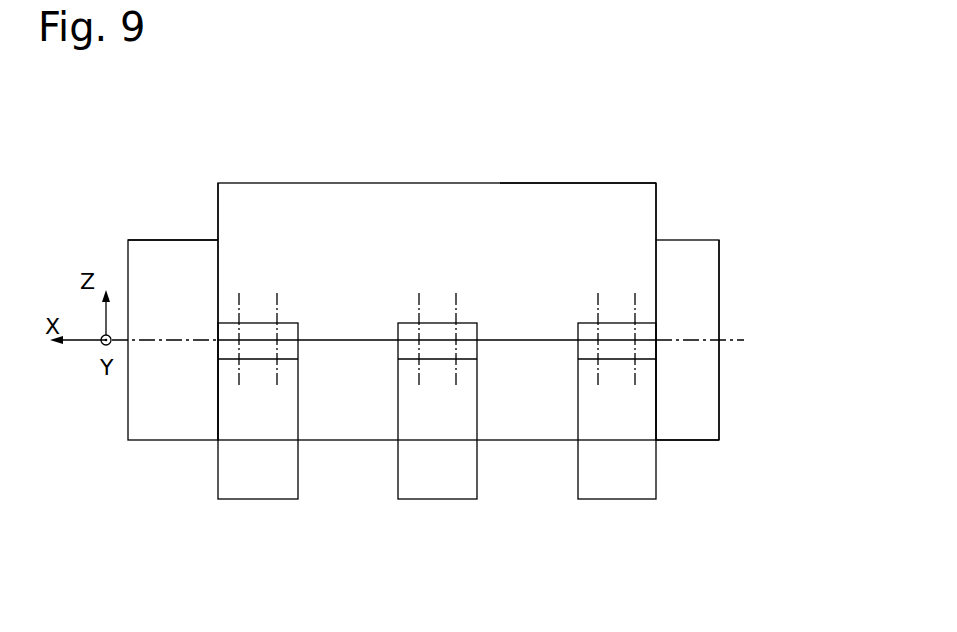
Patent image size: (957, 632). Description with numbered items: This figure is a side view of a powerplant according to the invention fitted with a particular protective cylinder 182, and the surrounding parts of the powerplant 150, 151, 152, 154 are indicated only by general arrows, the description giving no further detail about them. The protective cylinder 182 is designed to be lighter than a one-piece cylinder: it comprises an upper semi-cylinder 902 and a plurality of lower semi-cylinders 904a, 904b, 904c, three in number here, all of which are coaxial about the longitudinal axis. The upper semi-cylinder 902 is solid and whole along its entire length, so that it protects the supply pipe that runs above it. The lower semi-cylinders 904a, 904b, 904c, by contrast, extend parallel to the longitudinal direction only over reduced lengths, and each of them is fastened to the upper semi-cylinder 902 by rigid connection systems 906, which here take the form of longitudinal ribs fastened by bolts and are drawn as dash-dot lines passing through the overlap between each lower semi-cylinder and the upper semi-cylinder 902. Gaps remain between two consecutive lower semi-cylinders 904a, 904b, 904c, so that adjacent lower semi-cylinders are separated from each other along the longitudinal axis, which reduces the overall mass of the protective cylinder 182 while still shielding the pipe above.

The vehicle/assembly 150 is at (739, 505).
The assembly 151 is at (146, 207).
The right end block 152 is at (779, 465).
The left end block 154 is at (168, 434).
The protective cylinder 182 is at (692, 176).
The upper semi-cylinder 902 is at (308, 205).
The lower semi-cylinder 904a is at (237, 477).
The lower semi-cylinder 904b is at (424, 481).
The lower semi-cylinder 904c is at (615, 480).
The rigid connection system 906 is at (594, 334).